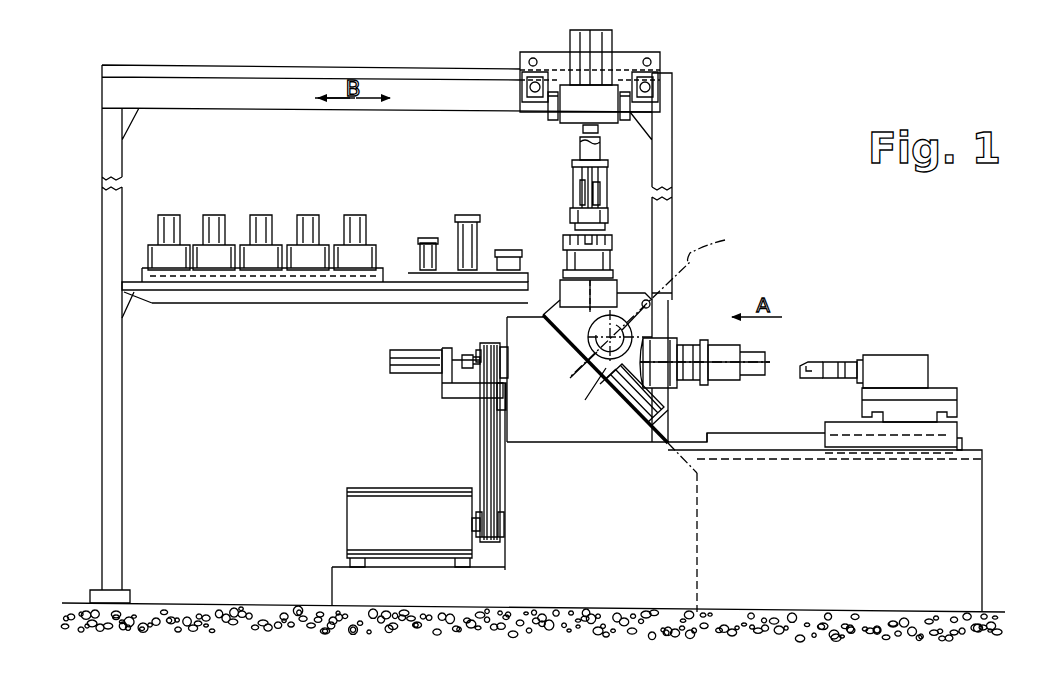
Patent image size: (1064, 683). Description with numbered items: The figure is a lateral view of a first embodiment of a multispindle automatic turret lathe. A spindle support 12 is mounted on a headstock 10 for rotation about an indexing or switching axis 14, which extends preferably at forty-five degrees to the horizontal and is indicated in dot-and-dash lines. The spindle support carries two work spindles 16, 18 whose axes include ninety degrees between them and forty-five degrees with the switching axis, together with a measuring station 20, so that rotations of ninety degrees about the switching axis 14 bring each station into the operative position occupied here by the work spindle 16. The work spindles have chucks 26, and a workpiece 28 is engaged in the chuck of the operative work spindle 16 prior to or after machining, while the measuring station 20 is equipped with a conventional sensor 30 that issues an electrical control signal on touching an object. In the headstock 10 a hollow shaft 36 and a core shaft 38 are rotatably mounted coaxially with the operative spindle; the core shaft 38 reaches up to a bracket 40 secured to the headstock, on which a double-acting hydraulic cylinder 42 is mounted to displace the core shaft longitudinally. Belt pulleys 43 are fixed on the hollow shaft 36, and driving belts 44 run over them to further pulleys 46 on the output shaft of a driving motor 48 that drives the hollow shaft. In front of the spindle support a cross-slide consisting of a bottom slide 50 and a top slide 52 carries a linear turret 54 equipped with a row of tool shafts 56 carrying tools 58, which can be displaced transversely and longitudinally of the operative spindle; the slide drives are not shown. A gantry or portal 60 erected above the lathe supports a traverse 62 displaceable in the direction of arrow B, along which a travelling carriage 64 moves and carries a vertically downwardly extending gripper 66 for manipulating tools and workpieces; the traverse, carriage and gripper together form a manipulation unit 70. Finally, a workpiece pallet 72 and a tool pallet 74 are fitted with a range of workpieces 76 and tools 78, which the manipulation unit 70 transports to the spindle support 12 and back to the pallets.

The headstock 10 is at (700, 493).
The spindle support 12 is at (662, 312).
The indexing or switching axis 14 is at (690, 255).
The work spindle 16 is at (692, 338).
The work spindle 18 is at (620, 252).
The measuring station 20 is at (612, 345).
The chuck 26 is at (565, 245).
The workpiece 28 is at (749, 372).
The sensor 30 is at (578, 340).
The hollow shaft 36 is at (506, 350).
The core shaft 38 is at (461, 357).
The bracket 40 is at (462, 393).
The double-acting hydraulic cylinder 42 is at (408, 352).
The belt pulleys 43 is at (506, 380).
The driving belts 44 is at (482, 456).
The pulleys 46 is at (498, 520).
The driving motor 48 is at (385, 495).
The bottom slide 50 is at (940, 432).
The top slide 52 is at (940, 395).
The linear turret 54 is at (902, 350).
The tool shafts 56 is at (840, 368).
The tools 58 is at (815, 380).
The gantry or portal 60 is at (678, 130).
The traverse 62 is at (670, 55).
The travelling carriage 64 is at (580, 108).
The gripper 66 is at (573, 182).
The manipulation unit 70 is at (618, 154).
The workpiece pallet 72 is at (193, 245).
The tool pallet 74 is at (446, 245).
The workpieces 76 is at (350, 225).
The tools 78 is at (428, 238).